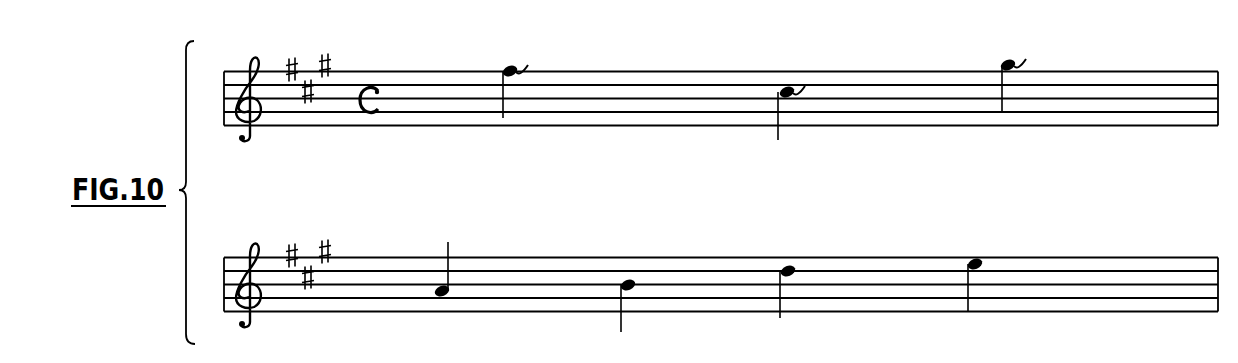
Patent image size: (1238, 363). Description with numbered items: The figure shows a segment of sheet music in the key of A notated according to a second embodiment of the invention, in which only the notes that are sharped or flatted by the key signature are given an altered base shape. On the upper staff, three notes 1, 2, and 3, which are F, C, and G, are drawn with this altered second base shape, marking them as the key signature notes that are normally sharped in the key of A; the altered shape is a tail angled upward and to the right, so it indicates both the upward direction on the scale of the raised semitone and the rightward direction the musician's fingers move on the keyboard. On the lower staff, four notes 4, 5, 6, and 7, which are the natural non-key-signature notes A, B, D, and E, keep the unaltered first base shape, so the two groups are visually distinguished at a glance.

The note 1 is at (506, 65).
The note 2 is at (778, 87).
The note 3 is at (1003, 62).
The note 4 is at (439, 300).
The note 5 is at (635, 280).
The note 6 is at (797, 264).
The note 7 is at (984, 258).